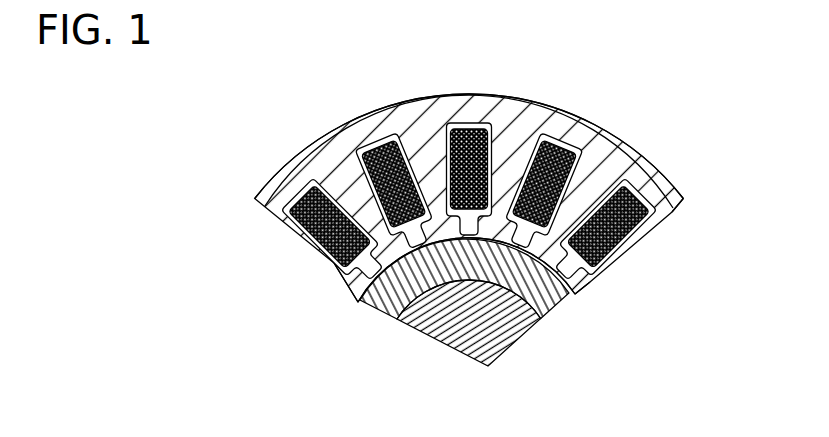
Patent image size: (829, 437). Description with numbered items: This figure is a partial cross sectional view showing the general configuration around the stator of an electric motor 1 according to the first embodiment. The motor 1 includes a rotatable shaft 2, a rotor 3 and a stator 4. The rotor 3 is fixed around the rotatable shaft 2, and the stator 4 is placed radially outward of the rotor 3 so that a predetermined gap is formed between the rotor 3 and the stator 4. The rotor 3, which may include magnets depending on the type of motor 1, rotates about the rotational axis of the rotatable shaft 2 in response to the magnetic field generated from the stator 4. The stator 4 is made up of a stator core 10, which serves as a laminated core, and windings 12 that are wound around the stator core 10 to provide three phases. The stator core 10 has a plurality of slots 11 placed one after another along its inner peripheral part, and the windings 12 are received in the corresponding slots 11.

The motor 1 is at (501, 208).
The rotatable shaft 2 is at (513, 327).
The rotor 3 is at (587, 281).
The stator 4 is at (469, 179).
The stator core 10 is at (671, 210).
The slots 11 is at (451, 211).
The windings 12 is at (489, 144).